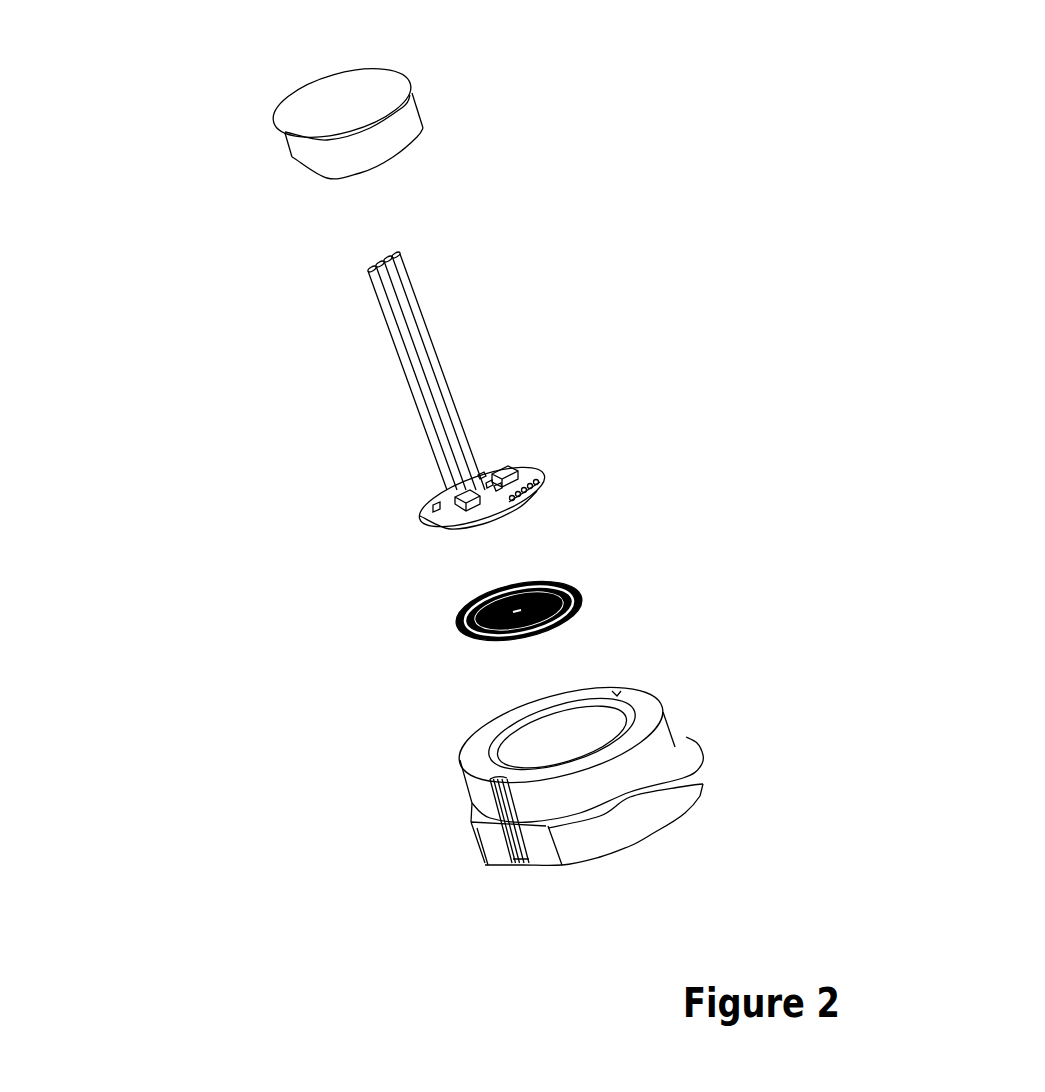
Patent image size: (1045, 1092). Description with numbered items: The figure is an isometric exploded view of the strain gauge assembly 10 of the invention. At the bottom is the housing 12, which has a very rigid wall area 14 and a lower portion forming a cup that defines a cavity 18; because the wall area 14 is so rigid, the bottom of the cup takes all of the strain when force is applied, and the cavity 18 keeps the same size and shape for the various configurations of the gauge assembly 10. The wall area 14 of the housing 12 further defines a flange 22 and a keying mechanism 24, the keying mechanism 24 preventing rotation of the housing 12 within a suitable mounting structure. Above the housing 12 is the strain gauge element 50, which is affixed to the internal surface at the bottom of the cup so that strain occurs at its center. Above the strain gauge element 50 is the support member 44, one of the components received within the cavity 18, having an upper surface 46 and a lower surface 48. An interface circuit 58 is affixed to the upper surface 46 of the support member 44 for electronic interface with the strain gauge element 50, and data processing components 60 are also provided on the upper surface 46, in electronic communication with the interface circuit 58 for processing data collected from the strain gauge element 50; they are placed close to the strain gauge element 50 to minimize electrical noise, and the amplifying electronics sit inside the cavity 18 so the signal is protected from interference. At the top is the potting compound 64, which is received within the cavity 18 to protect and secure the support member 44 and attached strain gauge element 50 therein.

The strain gauge assembly 10 is at (193, 238).
The housing 12 is at (550, 745).
The wall area 14 is at (663, 733).
The cavity 18 is at (527, 752).
The flange 22 is at (468, 808).
The keying mechanism 24 is at (505, 844).
The support member 44 is at (577, 488).
The upper surface 46 is at (521, 406).
The lower surface 48 is at (433, 525).
The strain gauge element 50 is at (583, 593).
The interface circuit 58 is at (540, 475).
The data processing components 60 is at (505, 463).
The potting compound 64 is at (423, 117).